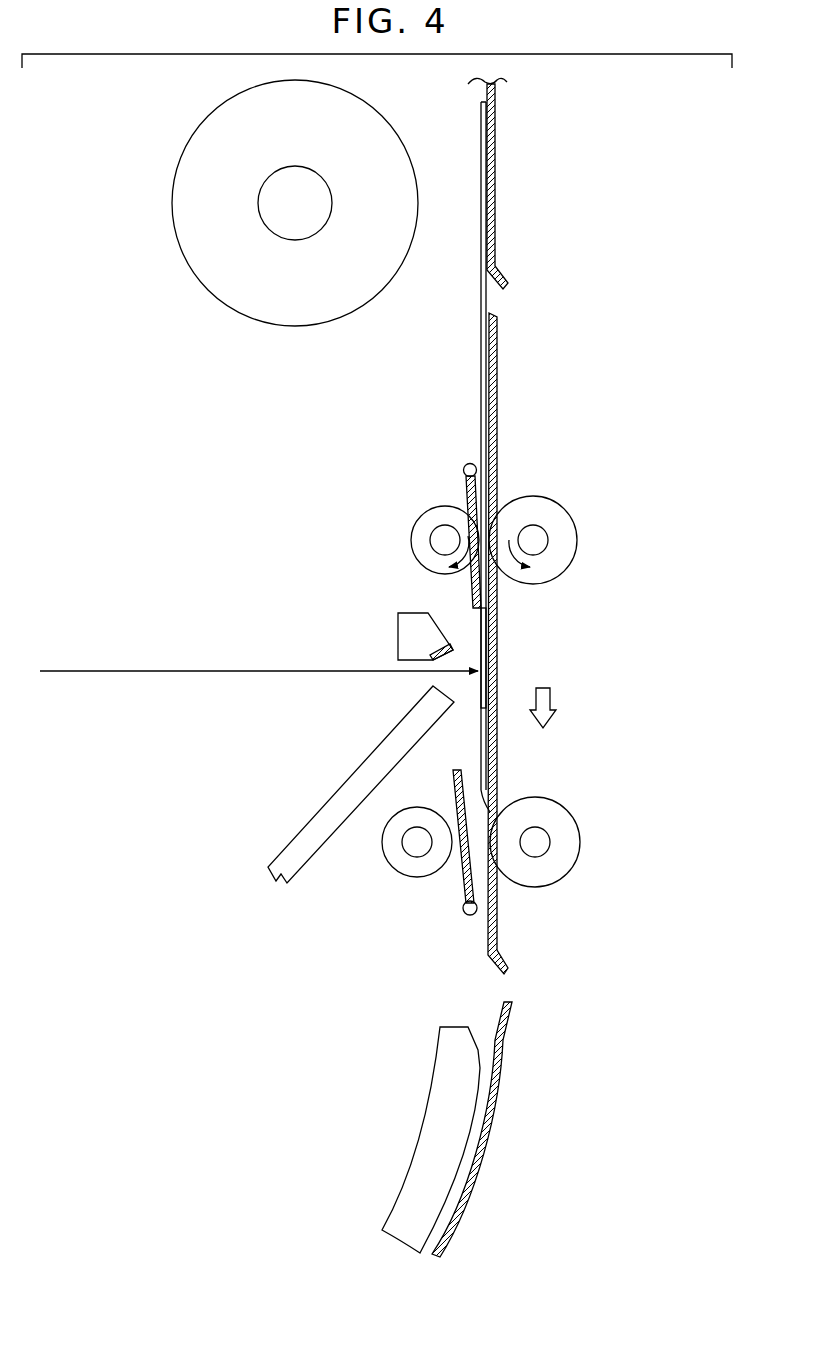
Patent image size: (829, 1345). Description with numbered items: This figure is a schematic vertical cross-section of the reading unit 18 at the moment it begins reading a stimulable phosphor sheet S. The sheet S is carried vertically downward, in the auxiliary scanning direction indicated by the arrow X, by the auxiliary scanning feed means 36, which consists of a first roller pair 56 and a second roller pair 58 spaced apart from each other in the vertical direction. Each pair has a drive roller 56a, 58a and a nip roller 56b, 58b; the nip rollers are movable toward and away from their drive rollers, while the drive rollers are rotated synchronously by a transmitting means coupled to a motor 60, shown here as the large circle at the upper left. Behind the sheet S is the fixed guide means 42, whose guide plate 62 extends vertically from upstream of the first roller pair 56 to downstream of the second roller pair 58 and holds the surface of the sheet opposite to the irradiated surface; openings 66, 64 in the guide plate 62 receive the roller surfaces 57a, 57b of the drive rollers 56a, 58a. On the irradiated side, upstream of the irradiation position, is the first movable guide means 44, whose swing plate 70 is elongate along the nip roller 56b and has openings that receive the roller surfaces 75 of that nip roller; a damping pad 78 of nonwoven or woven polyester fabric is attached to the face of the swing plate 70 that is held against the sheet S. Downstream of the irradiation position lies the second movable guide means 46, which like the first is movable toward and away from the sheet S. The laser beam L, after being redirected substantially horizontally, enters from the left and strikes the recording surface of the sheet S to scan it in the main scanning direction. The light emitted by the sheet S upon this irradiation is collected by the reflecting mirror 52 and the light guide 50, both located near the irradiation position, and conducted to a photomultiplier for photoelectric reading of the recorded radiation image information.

The motor 60 is at (173, 205).
The stimulable phosphor sheet S is at (480, 339).
The guide plate 62 is at (489, 414).
The fixed guide means 42 is at (498, 672).
The auxiliary scanning feed means 36 is at (335, 512).
The opening 66 is at (465, 506).
The first roller pair 56 is at (585, 511).
The roller surface 75 is at (425, 510).
The nip roller 56b is at (410, 545).
The drive roller 56a is at (534, 585).
The roller surface 57a is at (536, 495).
The first movable guide means 44 is at (405, 592).
The reflecting mirror 52 is at (433, 648).
The laser beam L is at (203, 670).
The arrow (auxiliary scanning direction) X is at (551, 708).
The reading unit 18 is at (308, 708).
The light guide 50 is at (292, 852).
The damping pad 78 is at (483, 790).
The second movable guide means 46 is at (452, 915).
The opening 64 is at (467, 880).
The swing plate 70 is at (455, 783).
The second roller pair 58 is at (586, 836).
The nip roller 58b is at (382, 863).
The drive roller 58a is at (540, 880).
The roller surface 57b is at (552, 800).